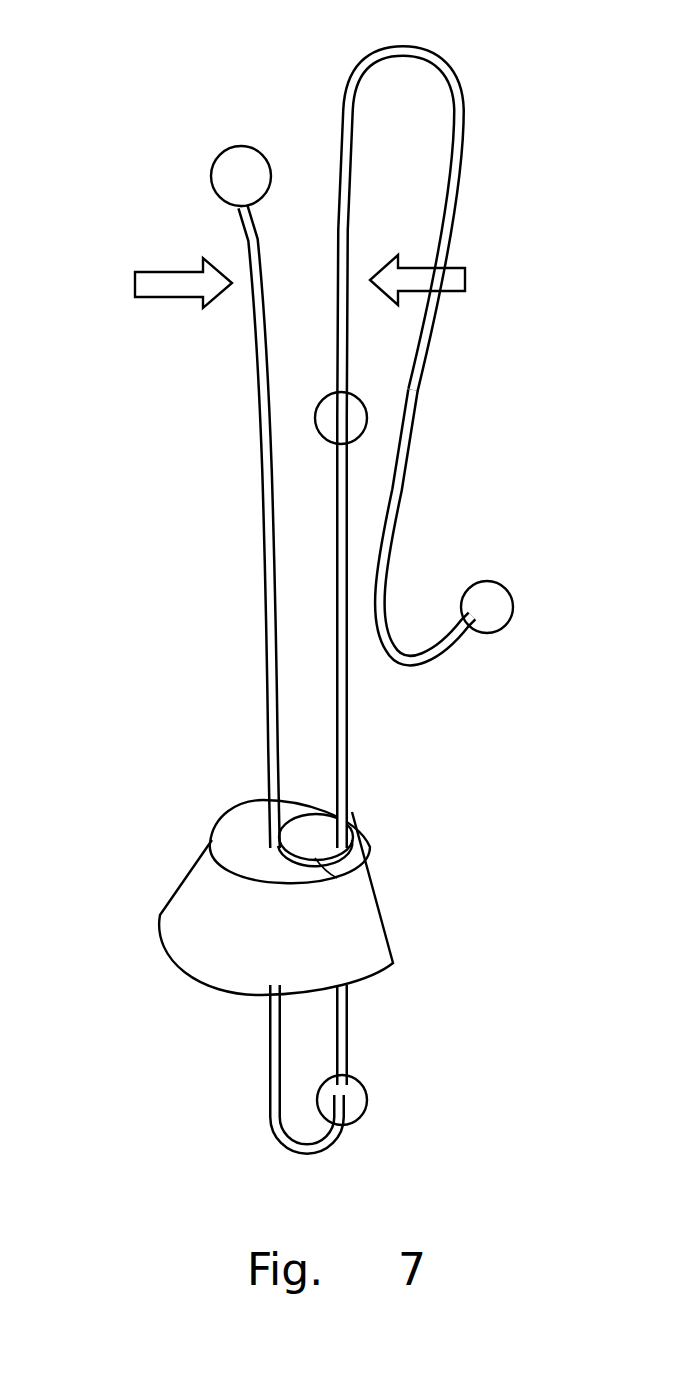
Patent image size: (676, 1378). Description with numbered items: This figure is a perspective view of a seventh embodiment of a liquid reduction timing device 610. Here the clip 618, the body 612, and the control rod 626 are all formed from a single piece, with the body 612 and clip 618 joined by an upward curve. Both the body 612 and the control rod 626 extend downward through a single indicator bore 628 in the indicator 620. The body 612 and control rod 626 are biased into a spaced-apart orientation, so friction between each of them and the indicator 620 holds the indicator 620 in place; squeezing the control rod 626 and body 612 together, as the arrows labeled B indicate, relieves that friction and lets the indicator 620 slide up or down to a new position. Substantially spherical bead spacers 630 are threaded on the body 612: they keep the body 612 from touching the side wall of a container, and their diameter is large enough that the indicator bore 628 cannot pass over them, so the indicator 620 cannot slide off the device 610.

The liquid reduction timing device 610 is at (290, 600).
The body 612 is at (407, 753).
The clip 618 is at (453, 503).
The indicator 620 is at (330, 897).
The control rod 626 is at (273, 633).
The indicator bore 628 is at (361, 848).
The spacers 630 is at (465, 398).